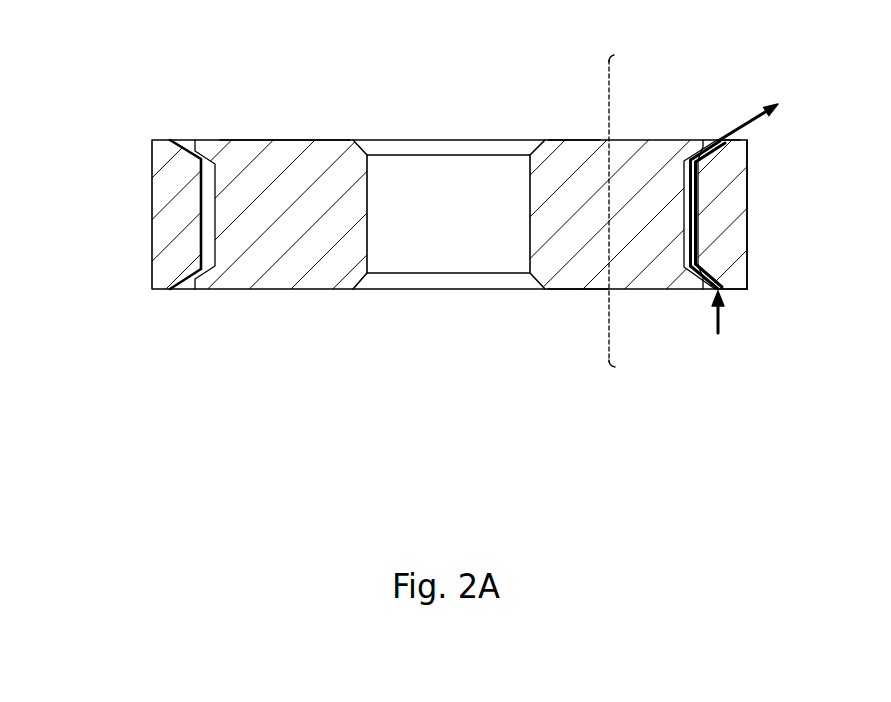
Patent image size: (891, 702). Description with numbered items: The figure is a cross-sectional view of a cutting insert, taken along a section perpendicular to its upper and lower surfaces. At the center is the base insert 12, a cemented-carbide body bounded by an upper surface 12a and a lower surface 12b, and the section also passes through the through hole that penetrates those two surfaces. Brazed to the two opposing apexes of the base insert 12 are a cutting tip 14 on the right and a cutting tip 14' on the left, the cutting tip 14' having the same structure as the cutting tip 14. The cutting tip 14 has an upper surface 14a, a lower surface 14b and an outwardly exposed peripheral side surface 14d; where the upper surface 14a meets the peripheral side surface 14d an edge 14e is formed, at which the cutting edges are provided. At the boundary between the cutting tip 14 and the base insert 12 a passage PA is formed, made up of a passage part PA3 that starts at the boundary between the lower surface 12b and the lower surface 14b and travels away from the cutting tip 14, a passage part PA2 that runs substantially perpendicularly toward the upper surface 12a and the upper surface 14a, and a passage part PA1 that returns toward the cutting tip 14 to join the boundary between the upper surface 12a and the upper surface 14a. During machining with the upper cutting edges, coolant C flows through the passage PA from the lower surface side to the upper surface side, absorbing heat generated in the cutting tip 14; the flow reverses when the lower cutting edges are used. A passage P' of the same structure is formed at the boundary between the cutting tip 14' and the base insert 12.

The base insert 12 is at (580, 262).
The upper surface 12a is at (569, 140).
The lower surface 12b is at (592, 290).
The cutting tip 14 is at (765, 214).
The cutting tip 14' is at (137, 151).
The upper surface 14a is at (725, 135).
The lower surface 14b is at (748, 292).
The peripheral side surface 14d is at (747, 188).
The edge 14e is at (467, 130).
The passage P' is at (224, 160).
The passage PA is at (605, 213).
The passage part PA1 is at (697, 150).
The passage part PA2 is at (683, 218).
The passage part PA3 is at (697, 272).
The coolant C is at (756, 125).